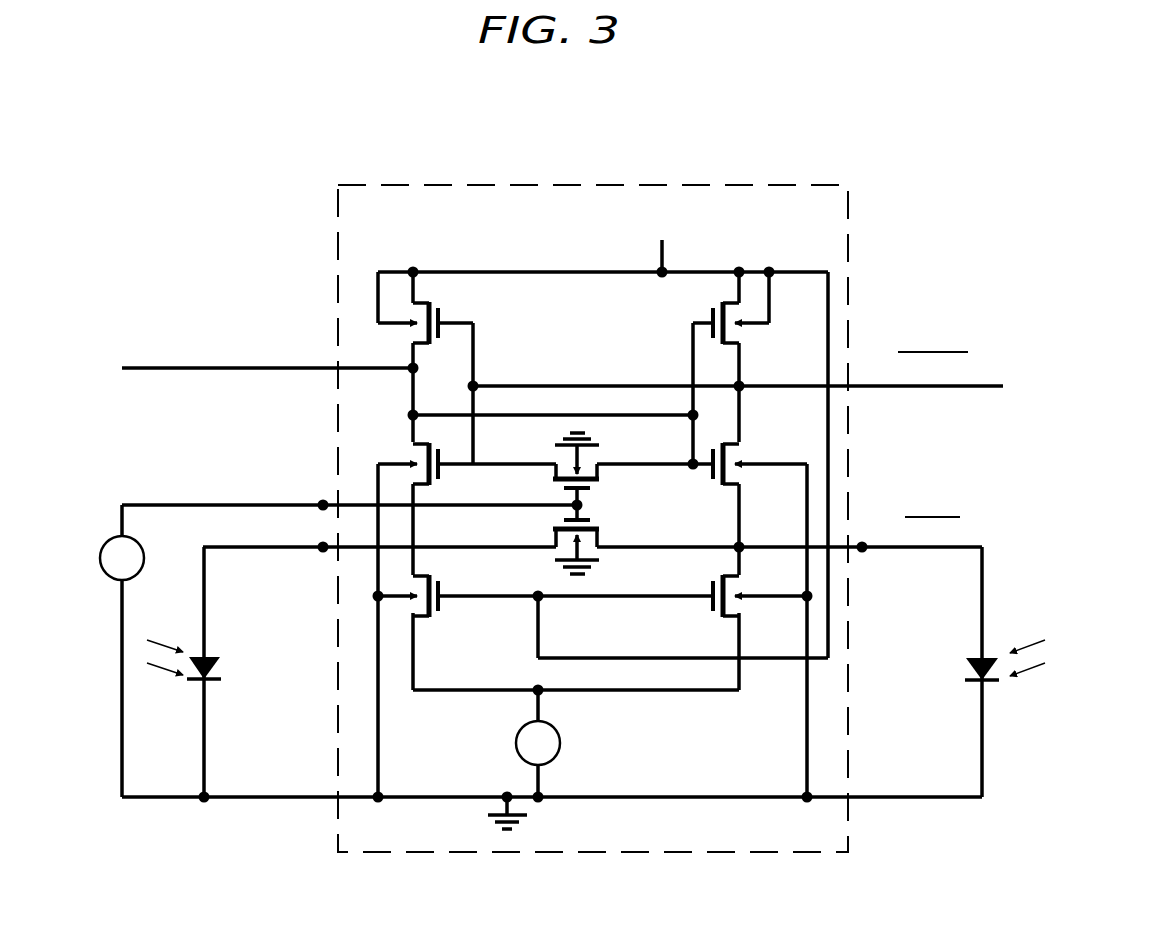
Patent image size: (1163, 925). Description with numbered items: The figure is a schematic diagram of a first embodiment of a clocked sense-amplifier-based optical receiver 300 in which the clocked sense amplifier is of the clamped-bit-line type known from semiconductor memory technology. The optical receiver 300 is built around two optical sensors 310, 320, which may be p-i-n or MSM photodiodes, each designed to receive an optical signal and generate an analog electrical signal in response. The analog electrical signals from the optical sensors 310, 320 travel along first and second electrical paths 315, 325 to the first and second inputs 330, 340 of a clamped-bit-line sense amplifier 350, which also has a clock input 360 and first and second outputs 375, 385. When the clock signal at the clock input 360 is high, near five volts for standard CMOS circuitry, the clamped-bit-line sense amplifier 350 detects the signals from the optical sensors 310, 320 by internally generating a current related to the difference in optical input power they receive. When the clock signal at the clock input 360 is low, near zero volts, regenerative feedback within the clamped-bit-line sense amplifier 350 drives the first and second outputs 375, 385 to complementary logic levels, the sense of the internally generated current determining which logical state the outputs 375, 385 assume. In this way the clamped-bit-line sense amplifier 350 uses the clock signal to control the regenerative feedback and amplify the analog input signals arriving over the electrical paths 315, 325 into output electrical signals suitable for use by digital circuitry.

The optical receiver 300 is at (988, 173).
The optical sensor 310 is at (210, 682).
The first electrical path 315 is at (262, 549).
The optical sensor 320 is at (993, 684).
The second electrical path 325 is at (925, 552).
The first input 330 is at (323, 547).
The second input 340 is at (862, 543).
The clamped-bit-line sense amplifier 350 is at (706, 184).
The clock input 360 is at (323, 505).
The first output 375 is at (122, 368).
The second output 385 is at (1003, 386).